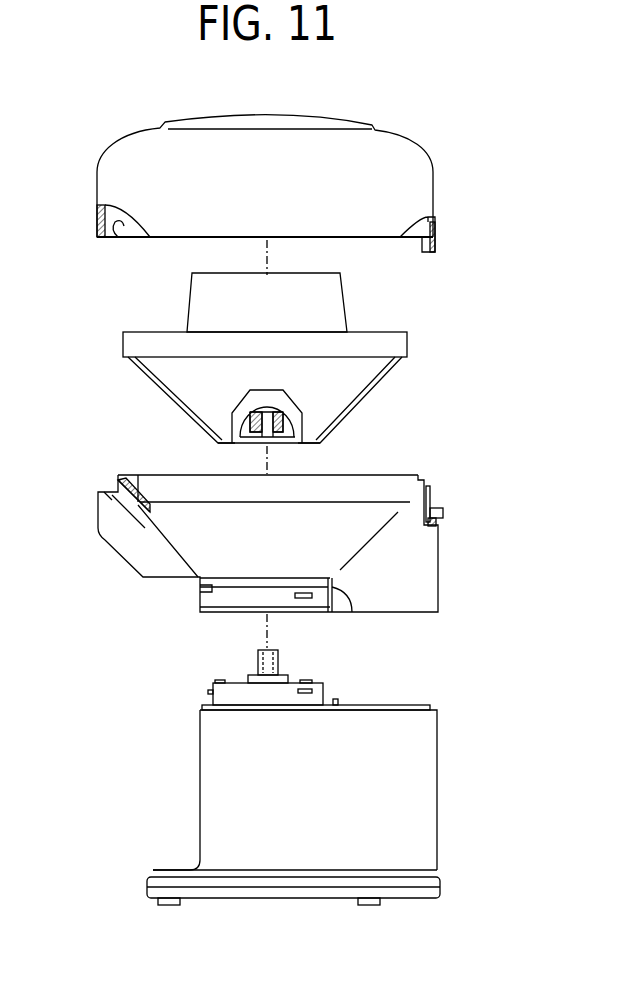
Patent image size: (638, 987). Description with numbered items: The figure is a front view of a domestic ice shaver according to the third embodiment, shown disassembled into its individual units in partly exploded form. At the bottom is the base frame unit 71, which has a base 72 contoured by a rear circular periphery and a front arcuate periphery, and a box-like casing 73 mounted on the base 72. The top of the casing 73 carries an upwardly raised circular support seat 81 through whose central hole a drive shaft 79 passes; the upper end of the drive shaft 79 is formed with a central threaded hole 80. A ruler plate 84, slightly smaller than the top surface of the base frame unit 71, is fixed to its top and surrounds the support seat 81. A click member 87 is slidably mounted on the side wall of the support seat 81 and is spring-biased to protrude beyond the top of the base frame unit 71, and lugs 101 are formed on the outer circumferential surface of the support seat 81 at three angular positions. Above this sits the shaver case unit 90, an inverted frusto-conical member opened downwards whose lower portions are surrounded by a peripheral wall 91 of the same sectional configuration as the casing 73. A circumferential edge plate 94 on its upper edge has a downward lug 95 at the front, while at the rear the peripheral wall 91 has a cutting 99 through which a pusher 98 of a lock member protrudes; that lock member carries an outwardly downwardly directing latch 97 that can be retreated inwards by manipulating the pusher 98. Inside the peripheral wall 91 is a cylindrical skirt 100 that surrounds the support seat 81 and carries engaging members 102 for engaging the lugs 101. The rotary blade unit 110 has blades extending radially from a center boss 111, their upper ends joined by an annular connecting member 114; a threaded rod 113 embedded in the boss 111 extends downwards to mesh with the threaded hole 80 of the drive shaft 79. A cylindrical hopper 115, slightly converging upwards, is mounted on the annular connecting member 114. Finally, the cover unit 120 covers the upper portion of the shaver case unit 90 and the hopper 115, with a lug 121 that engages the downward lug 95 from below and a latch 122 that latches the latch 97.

The cover unit 120 is at (450, 183).
The lug 121 is at (121, 237).
The latch 122 is at (440, 240).
The cylindrical hopper 115 is at (322, 305).
The rotary blade unit 110 is at (412, 343).
The annular connecting member 114 is at (125, 342).
The center boss 111 is at (240, 403).
The threaded rod 113 is at (267, 436).
The shaver case unit 90 is at (126, 575).
The circumferential edge plate 94 is at (386, 474).
The downward lug 95 is at (110, 486).
The latch 97 is at (432, 488).
The pusher 98 is at (445, 512).
The cutting 99 is at (438, 527).
The peripheral wall 91 is at (432, 592).
The cylindrical skirt 100 is at (340, 590).
The engaging members 102 is at (302, 592).
The threaded hole 80 is at (257, 660).
The drive shaft 79 is at (268, 677).
The support seat 81 is at (322, 690).
The click member 87 is at (336, 699).
The ruler plate 84 is at (410, 705).
The lugs 101 is at (302, 695).
The base frame unit 71 is at (448, 837).
The casing 73 is at (230, 795).
The base 72 is at (265, 892).